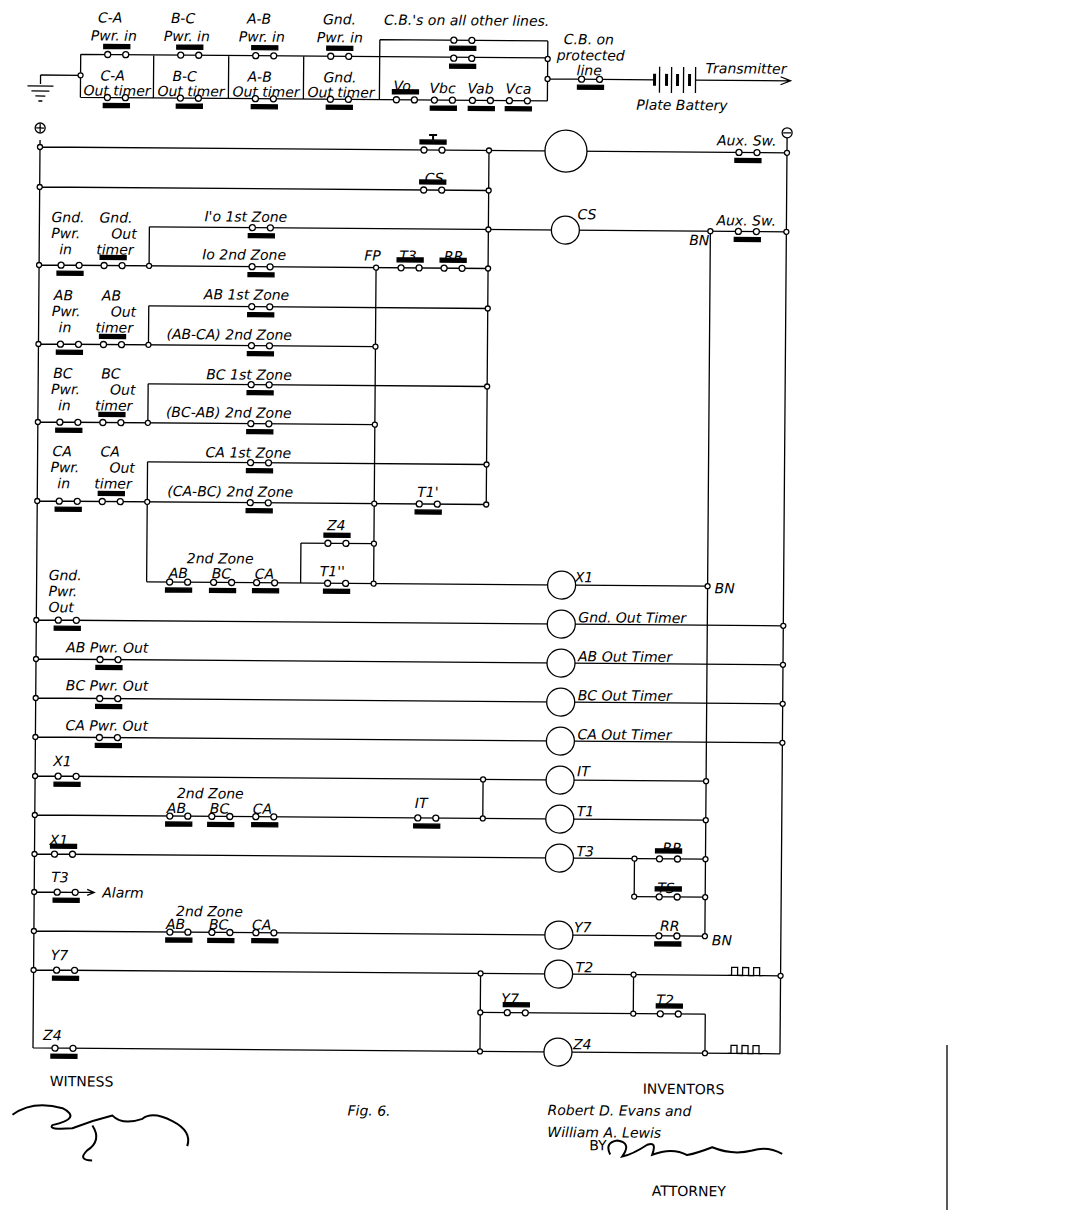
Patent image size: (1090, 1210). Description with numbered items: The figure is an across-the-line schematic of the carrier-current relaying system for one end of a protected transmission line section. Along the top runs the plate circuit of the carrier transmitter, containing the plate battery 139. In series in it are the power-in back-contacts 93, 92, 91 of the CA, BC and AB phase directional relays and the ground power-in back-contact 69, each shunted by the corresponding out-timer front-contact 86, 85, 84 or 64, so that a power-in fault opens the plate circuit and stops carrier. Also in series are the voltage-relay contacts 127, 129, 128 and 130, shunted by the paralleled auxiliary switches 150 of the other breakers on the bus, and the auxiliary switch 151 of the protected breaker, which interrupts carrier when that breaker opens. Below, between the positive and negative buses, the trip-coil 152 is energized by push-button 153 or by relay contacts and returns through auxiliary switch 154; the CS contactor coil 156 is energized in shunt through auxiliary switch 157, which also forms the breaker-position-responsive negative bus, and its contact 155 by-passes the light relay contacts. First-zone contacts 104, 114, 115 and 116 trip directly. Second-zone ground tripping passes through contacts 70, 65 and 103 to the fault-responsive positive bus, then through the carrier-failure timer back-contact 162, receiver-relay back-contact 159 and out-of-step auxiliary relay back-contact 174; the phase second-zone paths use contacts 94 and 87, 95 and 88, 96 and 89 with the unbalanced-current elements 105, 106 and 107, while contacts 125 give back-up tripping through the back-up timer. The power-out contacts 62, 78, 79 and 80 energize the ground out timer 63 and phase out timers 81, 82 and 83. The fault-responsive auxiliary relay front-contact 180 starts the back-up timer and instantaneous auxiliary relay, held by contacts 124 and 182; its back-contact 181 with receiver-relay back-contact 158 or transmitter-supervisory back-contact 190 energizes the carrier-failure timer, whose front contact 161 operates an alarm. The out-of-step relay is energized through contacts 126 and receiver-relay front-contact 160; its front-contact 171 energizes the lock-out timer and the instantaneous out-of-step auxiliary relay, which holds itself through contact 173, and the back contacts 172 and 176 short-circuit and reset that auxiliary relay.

The back-contact of power-in phase directional relay 93 is at (125, 58).
The back-contact of power-in phase directional relay 92 is at (198, 58).
The back-contact of power-in phase directional relay 91 is at (273, 58).
The back-contact of internal ground directional relay 69 is at (348, 58).
The front-contact of CA out timer 86 is at (110, 108).
The front-contact of BC out timer 85 is at (183, 108).
The front-contact of AB out timer 84 is at (258, 108).
The front-contact of ground power-out timer relay 64 is at (333, 108).
The auxiliary switches 150 is at (473, 41).
The back-contact of residual voltage relay 127 is at (400, 101).
The front contact of delta-phase voltage relay VBC 129 is at (440, 108).
The front contact of delta-phase voltage relay VAB 128 is at (478, 108).
The front contact of delta-phase voltage relay VCA 130 is at (515, 108).
The auxiliary switch 151 is at (588, 86).
The plate battery 139 is at (680, 62).
The push-button 153 is at (426, 138).
The trip-coil 152 is at (554, 170).
The auxiliary switch 154 is at (745, 157).
The contact of CS contactor 155 is at (428, 191).
The operating coil of CS contactor 156 is at (558, 240).
The auxiliary switch 157 is at (745, 236).
The front contact of first-zone ground over-current relay 104 is at (272, 229).
The front contact of second-zone ground over-current relay 103 is at (272, 268).
The back-contact of carrier-failure timer T3 162 is at (405, 269).
The back-contact of receiver relay RR 159 is at (449, 269).
The front-contact of internal ground directional relay 70 is at (70, 277).
The back-contact of ground power-out timer relay 65 is at (125, 269).
The make-contact of first-zone AB impedance element 114 is at (272, 308).
The unbalanced-current relaying element 105 is at (272, 347).
The front-contact of power-in phase directional relay 94 is at (70, 356).
The back-contact of AB out timer 87 is at (125, 348).
The make-contact of first-zone BC impedance element 115 is at (272, 386).
The unbalanced-current relaying element 106 is at (272, 425).
The front-contact of power-in phase directional relay 95 is at (70, 434).
The back-contact of BC out timer 88 is at (125, 426).
The make-contact of first-zone CA impedance element 116 is at (272, 464).
The unbalanced-current relaying element 107 is at (272, 504).
The front-contact of power-in phase directional relay 96 is at (70, 513).
The back-contact of CA out timer 89 is at (125, 505).
The back-contact of Z4 relay 174 is at (325, 543).
The make-contacts of second-zone impedance elements 125 is at (244, 602).
The front-contacts of external ground directional relay 62 is at (82, 616).
The ground power-out timer relay 63 is at (551, 628).
The contacts of AB power-out phase directional element 78 is at (123, 662).
The AB out timer 81 is at (551, 667).
The contacts of BC power-out phase directional element 79 is at (123, 701).
The BC out timer 82 is at (551, 706).
The contacts of CA power-out phase directional element 80 is at (123, 740).
The CA out timer 83 is at (551, 745).
The front-contact of X1 relay 180 is at (80, 780).
The make-contacts of second-zone impedance elements 124 is at (246, 836).
The front-contact of IT relay 182 is at (426, 826).
The back-contact of X1 relay 181 is at (82, 849).
The back-contact of receiver relay RR 158 is at (652, 843).
The front contact of carrier-failure timer T3 161 is at (80, 897).
The back-contact of transmitter-supervisory relay TS 190 is at (660, 900).
The make-contacts of second-zone impedance elements 126 is at (246, 952).
The front-contact of receiver relay RR 160 is at (662, 943).
The front-contact of Y7 relay 171 is at (80, 975).
The back contact of Y7 relay 172 is at (518, 1013).
The back-contact of T2 relay 176 is at (671, 1013).
The front-contact of Z4 relay 173 is at (80, 1044).